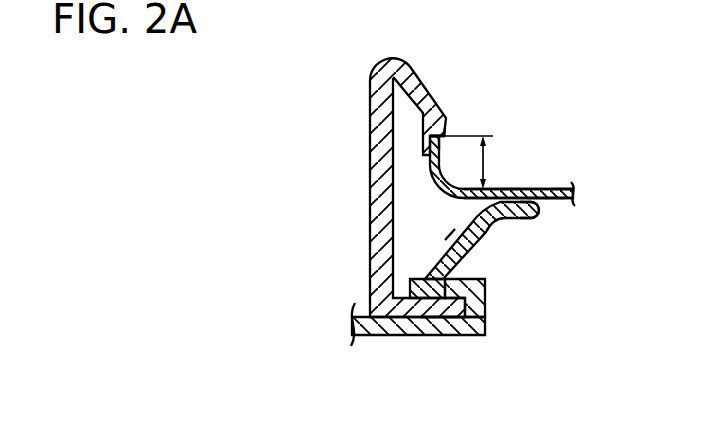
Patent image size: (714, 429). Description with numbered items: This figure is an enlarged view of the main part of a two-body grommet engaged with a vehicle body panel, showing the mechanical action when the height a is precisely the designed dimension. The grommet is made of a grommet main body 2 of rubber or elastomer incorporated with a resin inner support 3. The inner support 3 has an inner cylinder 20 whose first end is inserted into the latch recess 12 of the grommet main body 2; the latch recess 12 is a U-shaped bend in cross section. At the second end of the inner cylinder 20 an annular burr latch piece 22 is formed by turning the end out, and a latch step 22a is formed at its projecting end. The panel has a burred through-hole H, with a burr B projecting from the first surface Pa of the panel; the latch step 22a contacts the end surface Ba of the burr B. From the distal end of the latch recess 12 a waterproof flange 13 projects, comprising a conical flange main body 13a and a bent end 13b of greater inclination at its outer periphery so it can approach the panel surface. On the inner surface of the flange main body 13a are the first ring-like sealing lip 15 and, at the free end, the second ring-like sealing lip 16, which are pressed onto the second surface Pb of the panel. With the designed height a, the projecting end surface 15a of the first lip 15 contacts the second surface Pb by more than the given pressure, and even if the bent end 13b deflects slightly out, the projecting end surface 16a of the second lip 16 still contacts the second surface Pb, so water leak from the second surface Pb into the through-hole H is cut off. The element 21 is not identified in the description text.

The grommet main body 2 is at (388, 342).
The resin inner support 3 is at (391, 212).
The latch recess 12 is at (486, 316).
The waterproof flange 13 is at (449, 257).
The flange main body 13a is at (481, 250).
The bent end 13b is at (516, 219).
The first ring-like sealing lip 15 is at (503, 191).
The projecting end surface of the first sealing lip 15a is at (511, 192).
The second ring-like sealing lip 16 is at (529, 191).
The projecting end surface of the second sealing lip 16a is at (539, 192).
The inner cylinder 20 is at (375, 262).
The bottom portion 21 is at (440, 308).
The burr latch piece 22 is at (423, 90).
The latch step 22a is at (443, 130).
The burr B is at (463, 167).
The end surface of the burr Ba is at (452, 136).
The first surface of the vehicle body panel Pa is at (562, 188).
The second surface of the vehicle body panel Pb is at (555, 201).
The through-hole H is at (448, 235).
The height a is at (467, 162).